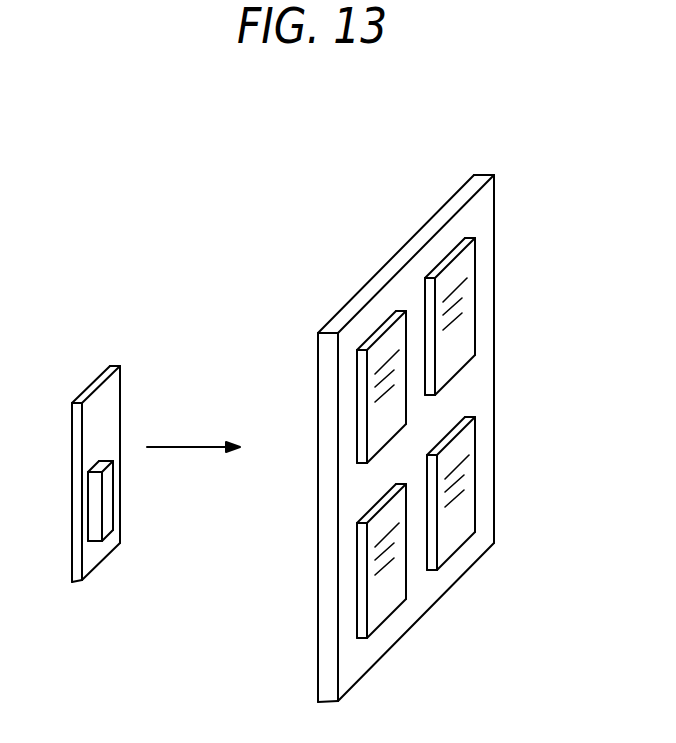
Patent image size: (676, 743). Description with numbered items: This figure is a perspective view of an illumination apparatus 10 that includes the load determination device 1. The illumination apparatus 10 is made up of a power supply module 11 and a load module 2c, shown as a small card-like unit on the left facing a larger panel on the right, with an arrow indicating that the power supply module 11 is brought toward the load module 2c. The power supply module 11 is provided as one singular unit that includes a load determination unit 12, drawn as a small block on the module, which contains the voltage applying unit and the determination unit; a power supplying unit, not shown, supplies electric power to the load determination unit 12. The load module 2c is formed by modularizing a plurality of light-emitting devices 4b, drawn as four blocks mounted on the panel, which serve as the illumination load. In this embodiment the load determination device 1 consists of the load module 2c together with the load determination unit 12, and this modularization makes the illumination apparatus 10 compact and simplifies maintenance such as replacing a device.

The illumination apparatus 10 is at (170, 202).
The load determination device 1 is at (252, 643).
The power supply module 11 is at (78, 370).
The load determination unit 12 is at (92, 541).
The load module 2c is at (327, 583).
The light-emitting devices 4b is at (460, 350).